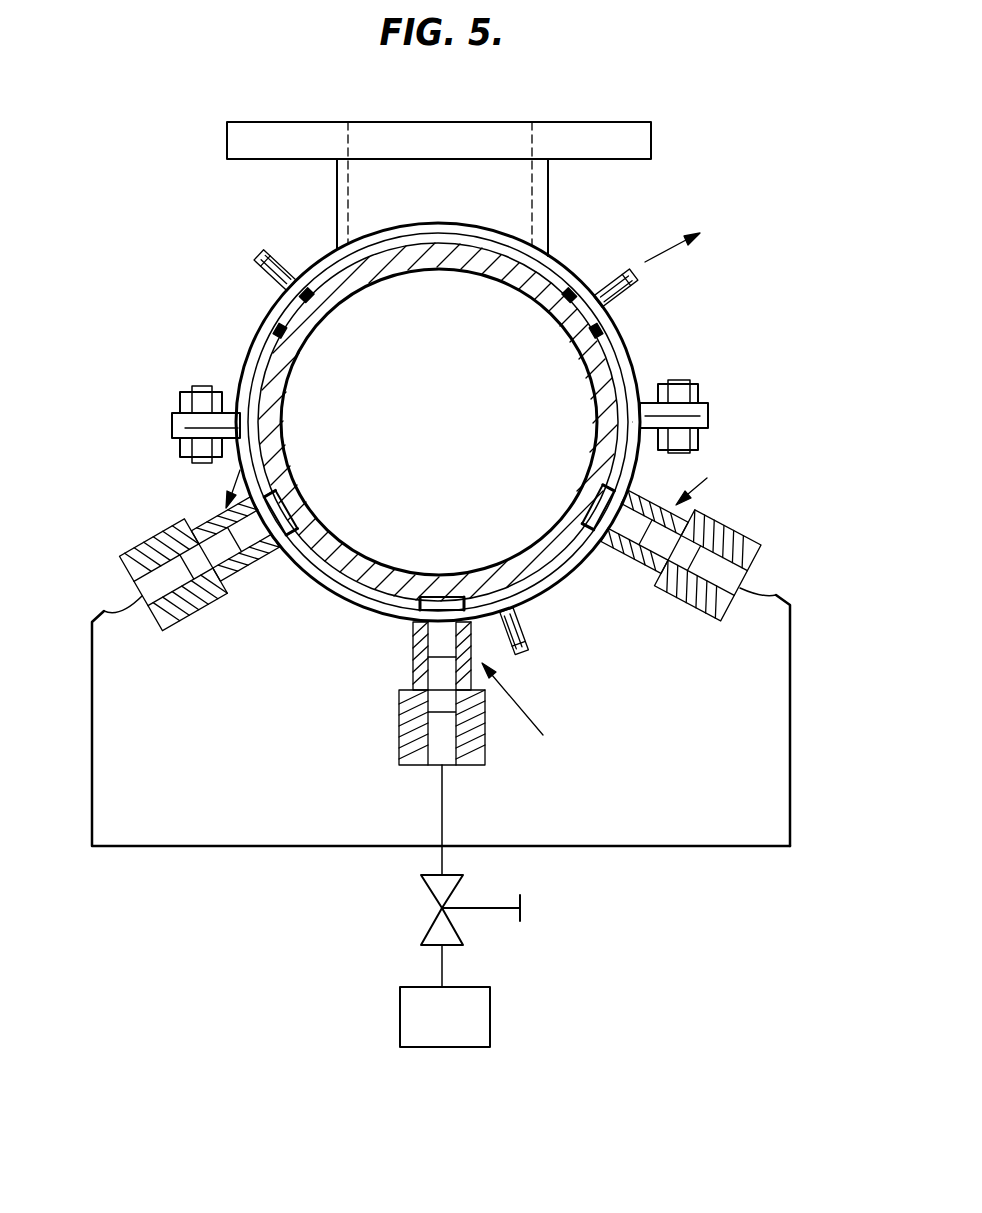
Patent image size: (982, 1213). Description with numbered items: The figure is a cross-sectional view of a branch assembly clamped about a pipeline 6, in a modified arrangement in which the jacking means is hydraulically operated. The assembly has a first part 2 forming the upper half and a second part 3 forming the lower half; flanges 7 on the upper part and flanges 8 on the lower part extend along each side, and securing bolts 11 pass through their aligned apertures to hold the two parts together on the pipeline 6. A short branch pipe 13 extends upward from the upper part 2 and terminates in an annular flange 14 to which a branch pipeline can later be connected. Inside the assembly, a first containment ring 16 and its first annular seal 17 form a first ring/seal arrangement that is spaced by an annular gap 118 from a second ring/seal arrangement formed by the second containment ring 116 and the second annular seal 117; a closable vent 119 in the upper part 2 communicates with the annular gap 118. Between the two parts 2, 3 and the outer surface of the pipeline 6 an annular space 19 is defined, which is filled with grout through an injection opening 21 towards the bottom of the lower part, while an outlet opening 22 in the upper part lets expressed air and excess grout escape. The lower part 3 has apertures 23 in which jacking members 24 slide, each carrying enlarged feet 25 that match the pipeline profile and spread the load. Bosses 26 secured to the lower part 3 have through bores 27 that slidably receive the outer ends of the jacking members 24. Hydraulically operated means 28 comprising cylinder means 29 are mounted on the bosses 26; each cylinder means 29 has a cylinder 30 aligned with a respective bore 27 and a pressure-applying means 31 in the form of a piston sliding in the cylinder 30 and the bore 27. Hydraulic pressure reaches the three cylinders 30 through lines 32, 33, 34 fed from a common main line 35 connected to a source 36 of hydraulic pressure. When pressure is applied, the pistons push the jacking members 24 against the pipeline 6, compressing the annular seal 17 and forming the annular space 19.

The first part 2 is at (573, 270).
The second part 3 is at (646, 460).
The pipeline 6 is at (600, 380).
The flanges 7 is at (195, 390).
The flanges 8 is at (178, 428).
The securing bolts 11 is at (700, 390).
The short branch pipe 13 is at (552, 195).
The annular flange 14 is at (578, 129).
The first containment ring 16 is at (410, 232).
The first annular seal 17 is at (462, 232).
The annular space 19 is at (628, 337).
The injection opening 21 is at (527, 635).
The outlet opening 22 is at (642, 292).
The apertures 23 is at (290, 547).
The jacking members 24 is at (748, 520).
The enlarged feet 25 is at (297, 517).
The bosses 26 is at (280, 433).
The through bores 27 is at (215, 523).
The hydraulically operated means 28 is at (448, 657).
The cylinder means 29 is at (104, 611).
The cylinder 30 is at (130, 572).
The pressure-applying means 31 is at (148, 550).
The line 32 is at (95, 775).
The line 33 is at (443, 803).
The line 34 is at (788, 790).
The common main line 35 is at (433, 857).
The source of hydraulic pressure 36 is at (470, 1035).
The second containment ring 116 is at (284, 333).
The second annular seal 117 is at (597, 328).
The annular gap 118 is at (548, 308).
The closable vent 119 is at (257, 262).